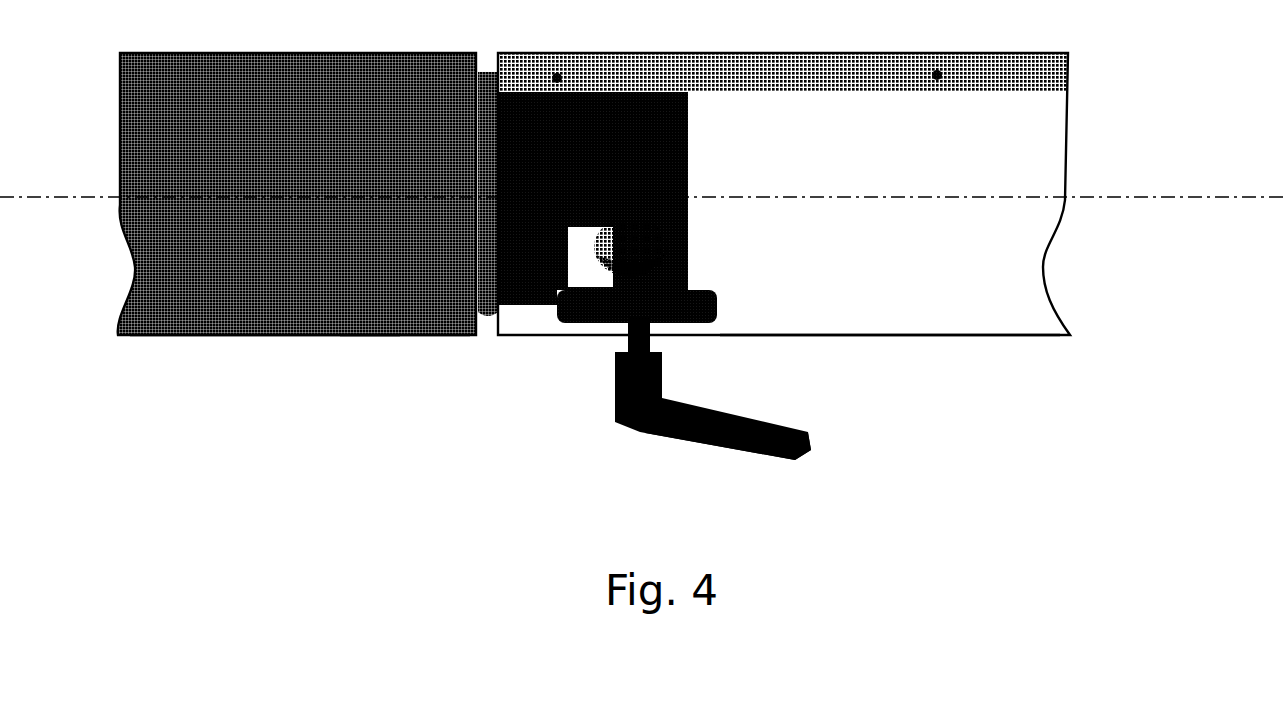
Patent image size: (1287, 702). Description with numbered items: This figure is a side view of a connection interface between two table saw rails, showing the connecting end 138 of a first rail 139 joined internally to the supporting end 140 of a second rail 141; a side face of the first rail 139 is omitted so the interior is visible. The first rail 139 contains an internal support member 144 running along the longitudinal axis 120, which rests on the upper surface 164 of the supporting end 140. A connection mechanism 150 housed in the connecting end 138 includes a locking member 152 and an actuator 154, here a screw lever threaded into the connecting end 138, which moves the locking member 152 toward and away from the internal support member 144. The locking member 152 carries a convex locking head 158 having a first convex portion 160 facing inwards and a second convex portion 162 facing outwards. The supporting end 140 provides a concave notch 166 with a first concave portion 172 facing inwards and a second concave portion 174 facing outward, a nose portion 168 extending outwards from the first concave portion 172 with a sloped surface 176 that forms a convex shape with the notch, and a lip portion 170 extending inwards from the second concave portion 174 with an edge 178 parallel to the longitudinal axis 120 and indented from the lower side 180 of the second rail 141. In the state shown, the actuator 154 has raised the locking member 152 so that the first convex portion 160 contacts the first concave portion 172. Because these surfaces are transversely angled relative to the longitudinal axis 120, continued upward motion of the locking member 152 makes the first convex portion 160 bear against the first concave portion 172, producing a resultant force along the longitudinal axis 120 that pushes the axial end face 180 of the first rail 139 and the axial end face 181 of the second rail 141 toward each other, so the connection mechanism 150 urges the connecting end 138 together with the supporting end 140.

The longitudinal axis 120 is at (1188, 198).
The connecting end 138 is at (568, 27).
The first rail 139 is at (933, 337).
The supporting end 140 is at (398, 34).
The second rail 141 is at (208, 335).
The internal support member 144 is at (1000, 90).
The connection mechanism 150 is at (592, 403).
The locking member 152 is at (717, 308).
The actuator 154 is at (634, 425).
The convex locking head 158 is at (602, 250).
The first convex portion 160 is at (660, 248).
The second convex portion 162 is at (602, 238).
The upper surface 164 is at (487, 72).
The concave notch 166 is at (586, 282).
The nose portion 168 is at (728, 250).
The lip portion 170 is at (530, 324).
The first concave portion 172 is at (627, 213).
The second concave portion 174 is at (590, 217).
The sloped surface 176 is at (683, 240).
The edge 178 is at (288, 398).
The axial end face 180 is at (397, 335).
The axial end face 181 is at (478, 274).